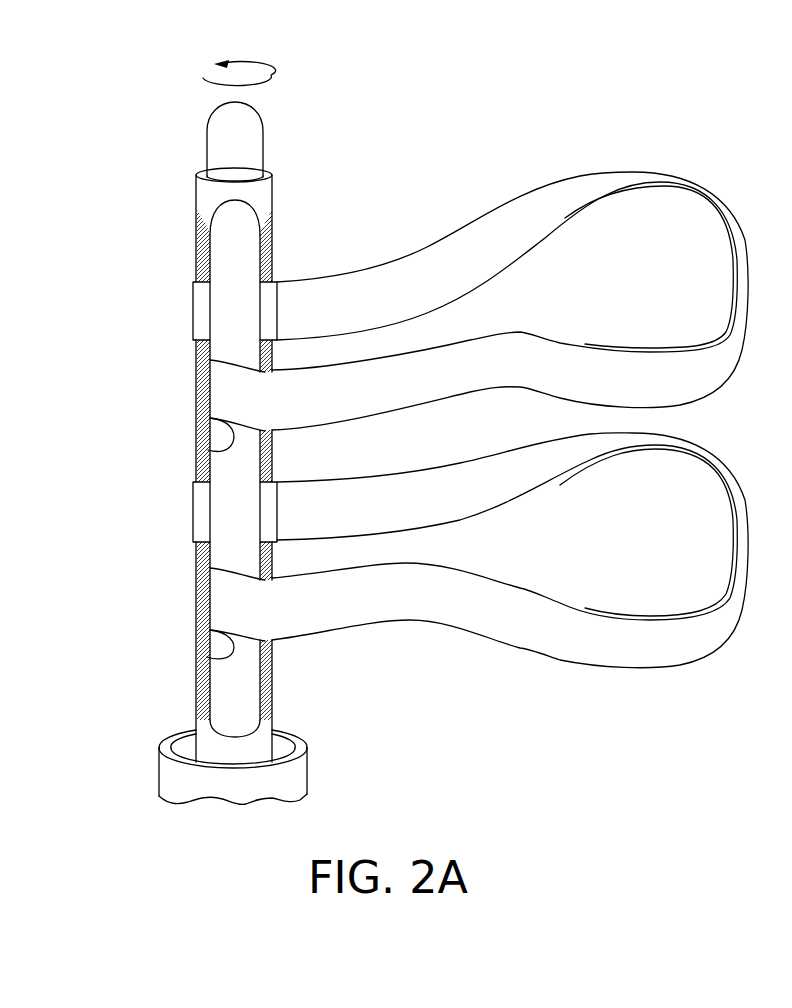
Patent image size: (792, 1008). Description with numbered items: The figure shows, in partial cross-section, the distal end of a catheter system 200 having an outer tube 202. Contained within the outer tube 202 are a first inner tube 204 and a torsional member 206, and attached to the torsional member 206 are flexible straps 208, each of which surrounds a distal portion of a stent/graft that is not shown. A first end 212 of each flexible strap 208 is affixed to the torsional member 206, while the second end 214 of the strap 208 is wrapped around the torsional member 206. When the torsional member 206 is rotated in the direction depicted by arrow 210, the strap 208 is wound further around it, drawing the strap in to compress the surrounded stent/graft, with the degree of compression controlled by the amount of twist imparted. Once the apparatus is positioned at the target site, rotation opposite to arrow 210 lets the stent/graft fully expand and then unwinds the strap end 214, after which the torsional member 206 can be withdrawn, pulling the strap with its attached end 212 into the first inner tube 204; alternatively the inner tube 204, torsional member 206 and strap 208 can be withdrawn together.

The catheter system 200 is at (366, 62).
The outer tube 202 is at (170, 738).
The first inner tube 204 is at (196, 200).
The torsional member 206 is at (206, 118).
The flexible strap 208 is at (620, 172).
The arrow 210 is at (270, 76).
The first end 212 is at (210, 446).
The second end 214 is at (193, 310).